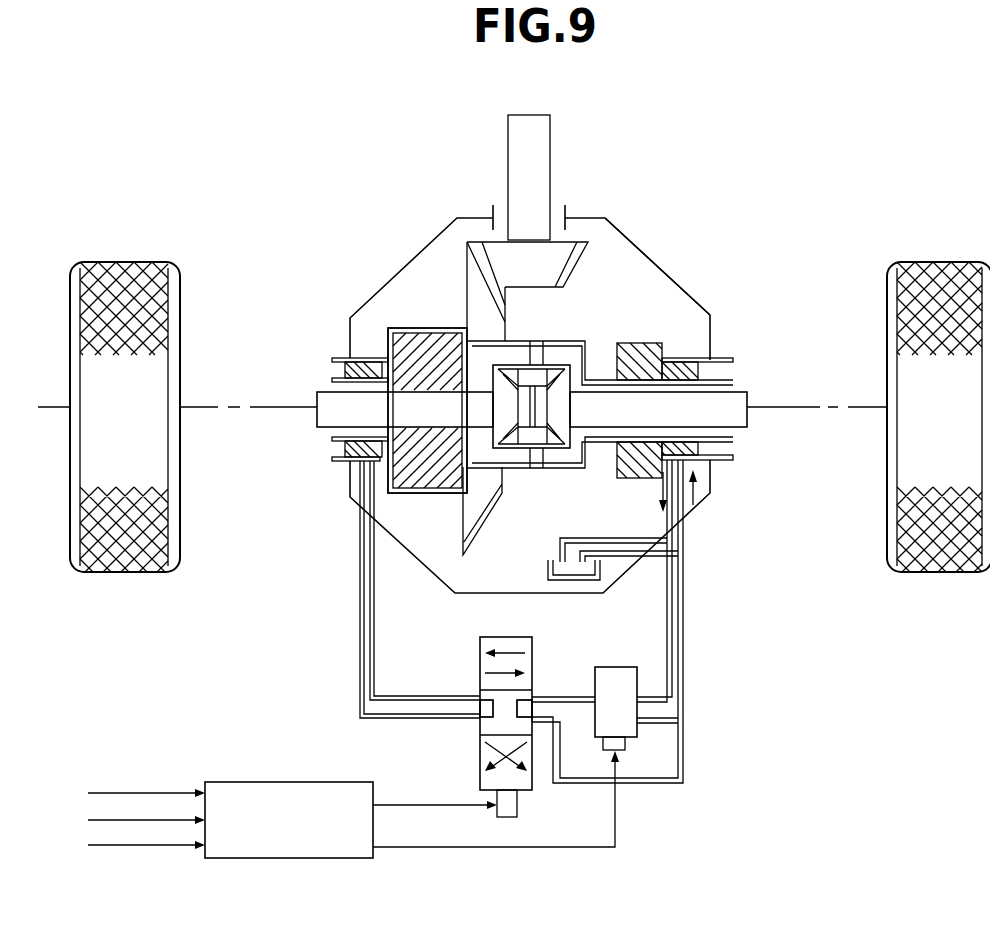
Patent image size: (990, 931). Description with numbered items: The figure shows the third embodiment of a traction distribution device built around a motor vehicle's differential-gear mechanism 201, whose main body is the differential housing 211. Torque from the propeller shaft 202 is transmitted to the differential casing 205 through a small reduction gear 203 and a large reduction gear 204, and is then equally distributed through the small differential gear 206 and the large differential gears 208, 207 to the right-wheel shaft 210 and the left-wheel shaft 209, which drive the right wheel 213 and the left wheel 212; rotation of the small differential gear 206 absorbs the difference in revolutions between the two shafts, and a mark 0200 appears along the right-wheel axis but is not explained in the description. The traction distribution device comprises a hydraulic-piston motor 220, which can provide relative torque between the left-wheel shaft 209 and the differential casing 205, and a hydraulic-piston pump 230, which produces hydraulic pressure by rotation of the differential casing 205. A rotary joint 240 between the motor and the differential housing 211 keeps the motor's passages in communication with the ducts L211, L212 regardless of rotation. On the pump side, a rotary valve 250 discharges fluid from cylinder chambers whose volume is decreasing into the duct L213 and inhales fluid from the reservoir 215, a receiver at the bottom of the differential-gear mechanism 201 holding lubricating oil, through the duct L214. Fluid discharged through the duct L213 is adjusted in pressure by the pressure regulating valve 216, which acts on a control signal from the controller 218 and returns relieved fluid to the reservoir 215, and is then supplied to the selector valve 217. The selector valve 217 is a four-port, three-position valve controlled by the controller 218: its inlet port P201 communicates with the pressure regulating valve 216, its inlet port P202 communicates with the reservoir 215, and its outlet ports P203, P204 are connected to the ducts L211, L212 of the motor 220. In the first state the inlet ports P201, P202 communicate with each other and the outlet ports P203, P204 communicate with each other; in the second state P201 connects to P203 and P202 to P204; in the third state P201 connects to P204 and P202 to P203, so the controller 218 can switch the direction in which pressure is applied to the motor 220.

The differential-gear mechanism 201 is at (612, 215).
The propeller shaft 202 is at (515, 150).
The small reduction gear 203 is at (488, 253).
The large reduction gear 204 is at (472, 292).
The differential casing 205 is at (407, 330).
The small differential gear 206 is at (540, 360).
The large differential gear 207 is at (500, 382).
The large differential gear 208 is at (562, 387).
The left-wheel shaft 209 is at (317, 427).
The right-wheel shaft 210 is at (745, 392).
The differential housing 211 is at (640, 250).
The left wheel 212 is at (115, 265).
The right wheel 213 is at (937, 265).
The reservoir 215 is at (548, 572).
The pressure regulating valve 216 is at (630, 685).
The selector valve 217 is at (497, 637).
The controller 218 is at (253, 782).
The hydraulic-piston motor 220 is at (426, 502).
The hydraulic-piston pump 230 is at (645, 336).
The rotary joint 240 is at (340, 365).
The rotary valve 250 is at (686, 354).
The axle center line 0200 is at (850, 399).
The duct L211 is at (372, 628).
The duct L212 is at (362, 615).
The duct L213 is at (672, 535).
The duct L214 is at (683, 525).
The inlet port P201 is at (532, 697).
The inlet port P202 is at (532, 722).
The outlet port P203 is at (480, 697).
The outlet port P204 is at (480, 720).